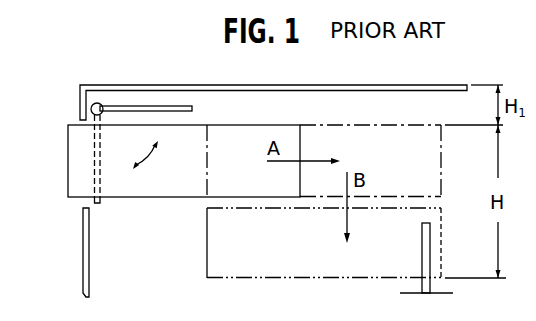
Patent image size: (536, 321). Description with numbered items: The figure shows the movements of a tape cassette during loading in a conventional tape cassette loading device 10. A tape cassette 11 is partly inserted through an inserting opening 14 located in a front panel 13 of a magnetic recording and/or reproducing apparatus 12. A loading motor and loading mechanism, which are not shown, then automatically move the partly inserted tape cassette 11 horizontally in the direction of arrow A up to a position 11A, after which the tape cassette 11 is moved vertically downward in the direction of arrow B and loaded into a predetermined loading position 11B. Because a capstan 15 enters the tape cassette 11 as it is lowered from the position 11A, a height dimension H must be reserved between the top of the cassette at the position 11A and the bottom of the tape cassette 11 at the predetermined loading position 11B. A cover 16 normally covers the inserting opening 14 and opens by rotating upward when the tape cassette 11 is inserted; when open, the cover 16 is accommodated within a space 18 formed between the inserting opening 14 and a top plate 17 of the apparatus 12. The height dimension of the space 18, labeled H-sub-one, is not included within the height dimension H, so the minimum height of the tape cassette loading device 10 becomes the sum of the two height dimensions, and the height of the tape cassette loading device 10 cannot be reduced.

The tape cassette loading device 10 is at (364, 70).
The tape cassette 11 is at (68, 138).
The position 11A is at (393, 122).
The predetermined loading position 11B is at (205, 260).
The magnetic recording and/or reproducing apparatus 12 is at (415, 82).
The front panel 13 is at (83, 251).
The inserting opening 14 is at (82, 203).
The capstan 15 is at (428, 259).
The cover 16 is at (125, 105).
The top plate 17 is at (276, 84).
The space 18 is at (183, 97).